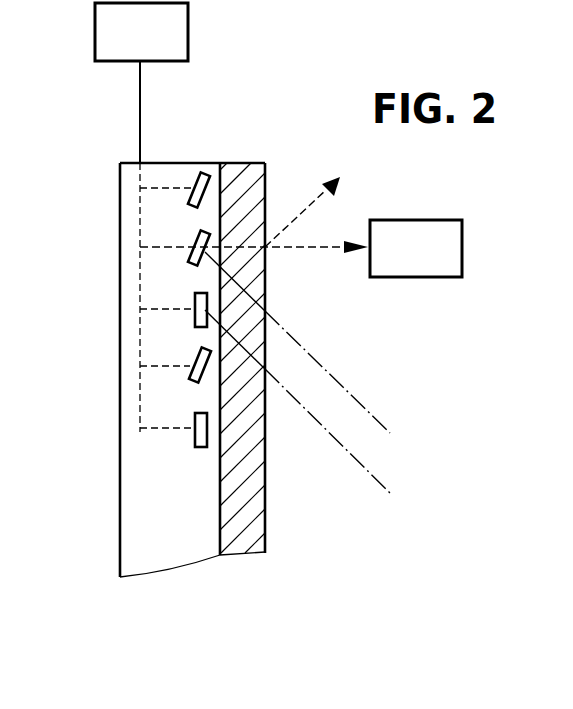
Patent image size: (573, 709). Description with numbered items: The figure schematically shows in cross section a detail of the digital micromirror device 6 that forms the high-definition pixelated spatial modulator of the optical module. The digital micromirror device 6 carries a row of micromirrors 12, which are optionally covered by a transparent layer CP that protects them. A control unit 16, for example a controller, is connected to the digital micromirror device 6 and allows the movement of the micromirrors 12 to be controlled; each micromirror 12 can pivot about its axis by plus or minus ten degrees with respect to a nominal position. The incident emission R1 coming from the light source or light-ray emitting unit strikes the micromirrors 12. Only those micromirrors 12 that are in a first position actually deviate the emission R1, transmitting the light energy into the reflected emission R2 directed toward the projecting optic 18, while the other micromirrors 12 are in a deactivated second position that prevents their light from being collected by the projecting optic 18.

The digital micromirror device 6 is at (96, 533).
The micromirrors 12 is at (193, 243).
The control unit 16 is at (156, 46).
The projecting optic 18 is at (431, 262).
The protective layer CP is at (237, 183).
The incident emission R1 is at (310, 413).
The reflected emission R2 is at (313, 252).